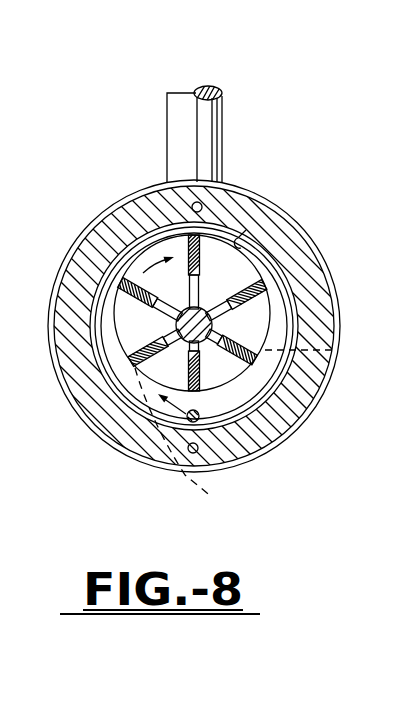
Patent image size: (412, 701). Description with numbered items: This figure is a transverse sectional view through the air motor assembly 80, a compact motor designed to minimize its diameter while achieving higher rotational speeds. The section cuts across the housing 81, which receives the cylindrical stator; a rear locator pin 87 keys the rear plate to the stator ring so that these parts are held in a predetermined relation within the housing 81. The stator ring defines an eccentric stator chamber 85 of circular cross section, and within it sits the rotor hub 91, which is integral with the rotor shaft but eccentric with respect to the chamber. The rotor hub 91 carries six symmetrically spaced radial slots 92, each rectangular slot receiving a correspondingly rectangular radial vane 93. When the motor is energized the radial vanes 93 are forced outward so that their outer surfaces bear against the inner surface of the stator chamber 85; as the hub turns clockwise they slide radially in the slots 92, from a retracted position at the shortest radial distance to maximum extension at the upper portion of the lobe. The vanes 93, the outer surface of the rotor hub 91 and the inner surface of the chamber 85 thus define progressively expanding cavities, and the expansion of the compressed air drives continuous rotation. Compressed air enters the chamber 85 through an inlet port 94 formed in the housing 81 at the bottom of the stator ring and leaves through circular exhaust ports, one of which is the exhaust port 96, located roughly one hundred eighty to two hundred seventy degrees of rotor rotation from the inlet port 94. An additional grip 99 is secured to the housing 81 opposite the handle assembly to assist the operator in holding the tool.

The air motor assembly 80 is at (130, 178).
The housing 81 is at (262, 193).
The eccentric stator chamber 85 is at (240, 237).
The rear locator pin 87 is at (188, 413).
The rotor hub 91 is at (233, 278).
The radial slots 92 is at (162, 322).
The radial vanes 93 is at (125, 277).
The inlet port 94 is at (195, 442).
The exhaust port 96 is at (282, 300).
The grip 99 is at (226, 92).